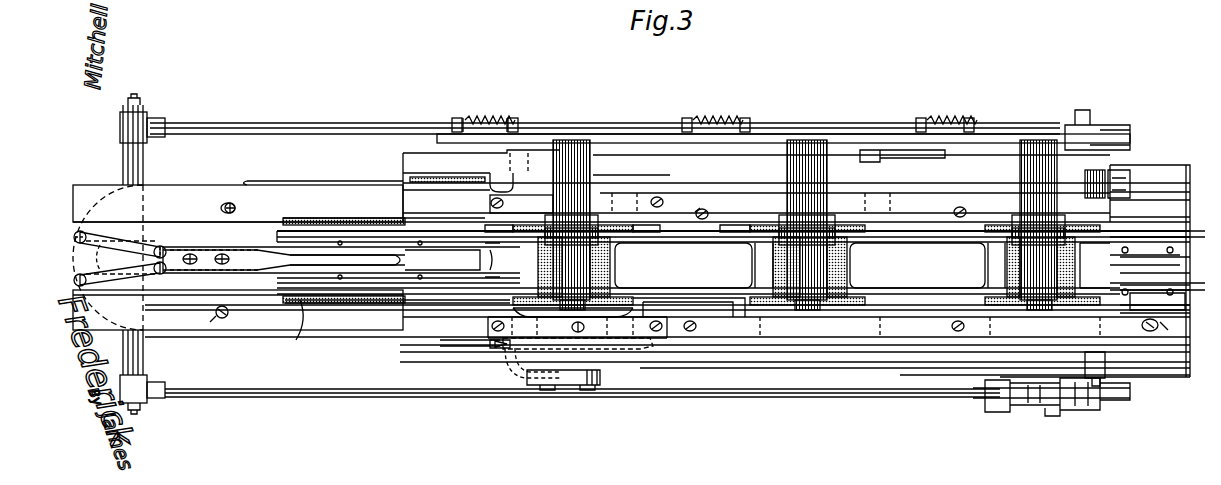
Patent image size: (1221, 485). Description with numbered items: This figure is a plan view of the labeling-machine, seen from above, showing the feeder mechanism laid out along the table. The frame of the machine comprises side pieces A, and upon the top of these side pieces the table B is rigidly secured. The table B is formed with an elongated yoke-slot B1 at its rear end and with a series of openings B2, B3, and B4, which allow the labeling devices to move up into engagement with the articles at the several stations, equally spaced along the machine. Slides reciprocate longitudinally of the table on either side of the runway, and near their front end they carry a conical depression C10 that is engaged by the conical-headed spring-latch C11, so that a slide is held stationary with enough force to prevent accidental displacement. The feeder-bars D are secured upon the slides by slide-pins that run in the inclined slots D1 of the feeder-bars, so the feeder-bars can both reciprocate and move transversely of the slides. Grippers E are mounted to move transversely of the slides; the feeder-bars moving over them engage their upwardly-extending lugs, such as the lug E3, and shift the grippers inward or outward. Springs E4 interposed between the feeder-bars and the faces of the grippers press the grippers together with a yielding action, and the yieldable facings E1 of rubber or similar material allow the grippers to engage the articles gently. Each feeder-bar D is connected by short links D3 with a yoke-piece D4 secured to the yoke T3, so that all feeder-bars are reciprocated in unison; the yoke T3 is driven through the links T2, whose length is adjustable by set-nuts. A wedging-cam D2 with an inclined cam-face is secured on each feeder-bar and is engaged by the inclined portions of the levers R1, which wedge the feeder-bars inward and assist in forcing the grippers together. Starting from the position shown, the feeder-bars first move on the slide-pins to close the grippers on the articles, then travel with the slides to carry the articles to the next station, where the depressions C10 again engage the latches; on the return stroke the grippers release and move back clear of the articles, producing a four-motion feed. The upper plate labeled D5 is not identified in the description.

The side pieces A is at (1176, 365).
The table B is at (80, 262).
The yoke-slot B1 is at (410, 263).
The opening B2 is at (656, 252).
The opening B3 is at (870, 250).
The opening B4 is at (1105, 255).
The conical depression C10 is at (1100, 208).
The spring-latch C11 is at (1110, 185).
The feeder-bars D is at (631, 277).
The inclined slots D1 is at (215, 320).
The wedging-cam D2 is at (578, 345).
The links D3 is at (125, 235).
The yoke-piece D4 is at (163, 272).
The upper plate D5 is at (312, 186).
The grippers E is at (270, 302).
The yieldable facings E1 is at (283, 296).
The lug E3 is at (338, 338).
The springs E4 is at (396, 337).
The levers R1 is at (498, 350).
The links T2 is at (825, 398).
The yoke T3 is at (130, 356).